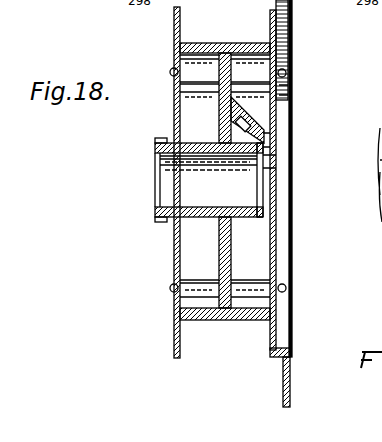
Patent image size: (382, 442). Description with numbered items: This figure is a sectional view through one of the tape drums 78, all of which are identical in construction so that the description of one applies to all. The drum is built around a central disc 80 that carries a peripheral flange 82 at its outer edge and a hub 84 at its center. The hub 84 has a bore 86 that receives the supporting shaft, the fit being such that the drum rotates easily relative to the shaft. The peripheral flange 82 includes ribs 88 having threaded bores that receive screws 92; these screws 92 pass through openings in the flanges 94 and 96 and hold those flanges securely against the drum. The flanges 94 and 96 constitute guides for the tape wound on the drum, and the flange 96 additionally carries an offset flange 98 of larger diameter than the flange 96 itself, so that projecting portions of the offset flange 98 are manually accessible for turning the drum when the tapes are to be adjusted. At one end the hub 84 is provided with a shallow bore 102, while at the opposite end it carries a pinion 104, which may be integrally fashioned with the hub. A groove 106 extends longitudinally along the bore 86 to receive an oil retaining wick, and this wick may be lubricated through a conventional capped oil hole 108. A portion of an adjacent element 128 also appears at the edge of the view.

The tape drum 78 is at (243, 43).
The central disc 80 is at (288, 90).
The peripheral flange 82 is at (202, 43).
The hub 84 is at (264, 140).
The bore 86 is at (160, 198).
The ribs 88 is at (272, 63).
The screws 92 is at (170, 72).
The flange 94 is at (174, 33).
The flange 96 is at (283, 35).
The offset flange 98 is at (292, 8).
The shallow bore 102 is at (278, 160).
The pinion 104 is at (155, 136).
The groove 106 is at (210, 153).
The capped oil hole 108 is at (262, 120).
The wheel rim 128 is at (378, 187).